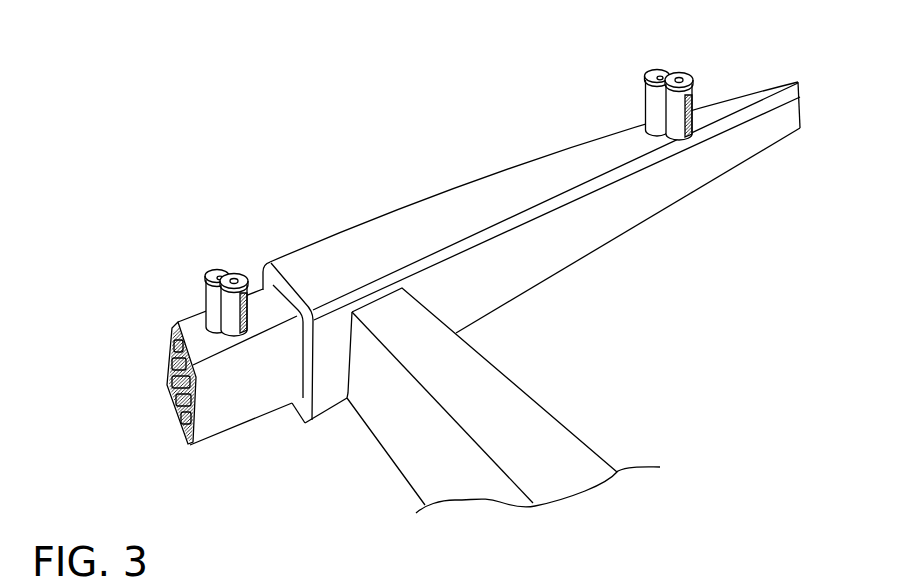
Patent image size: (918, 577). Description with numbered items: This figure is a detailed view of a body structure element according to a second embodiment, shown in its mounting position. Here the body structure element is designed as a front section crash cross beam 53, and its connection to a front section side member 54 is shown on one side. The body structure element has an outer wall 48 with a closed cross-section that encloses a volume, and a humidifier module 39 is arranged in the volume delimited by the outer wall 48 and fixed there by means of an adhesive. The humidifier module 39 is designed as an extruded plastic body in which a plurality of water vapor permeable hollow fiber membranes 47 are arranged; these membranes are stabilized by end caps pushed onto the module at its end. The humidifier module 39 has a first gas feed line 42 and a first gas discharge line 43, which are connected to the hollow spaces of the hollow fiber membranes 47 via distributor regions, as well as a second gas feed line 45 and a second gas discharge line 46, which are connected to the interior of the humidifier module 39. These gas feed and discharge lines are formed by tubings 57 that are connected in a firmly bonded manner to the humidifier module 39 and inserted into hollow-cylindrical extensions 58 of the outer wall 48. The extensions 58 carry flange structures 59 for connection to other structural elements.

The humidifier module 39 is at (178, 322).
The first gas feed line 42 is at (687, 92).
The first gas discharge line 43 is at (246, 272).
The second gas feed line 45 is at (220, 267).
The second gas discharge line 46 is at (663, 72).
The hollow fiber membranes 47 is at (180, 384).
The outer wall 48 is at (588, 225).
The front section crash cross beam 53 is at (510, 170).
The front section side member 54 is at (540, 402).
The tubings 57 is at (203, 263).
The hollow-cylindrical extensions 58 is at (643, 98).
The flange structures 59 is at (647, 77).